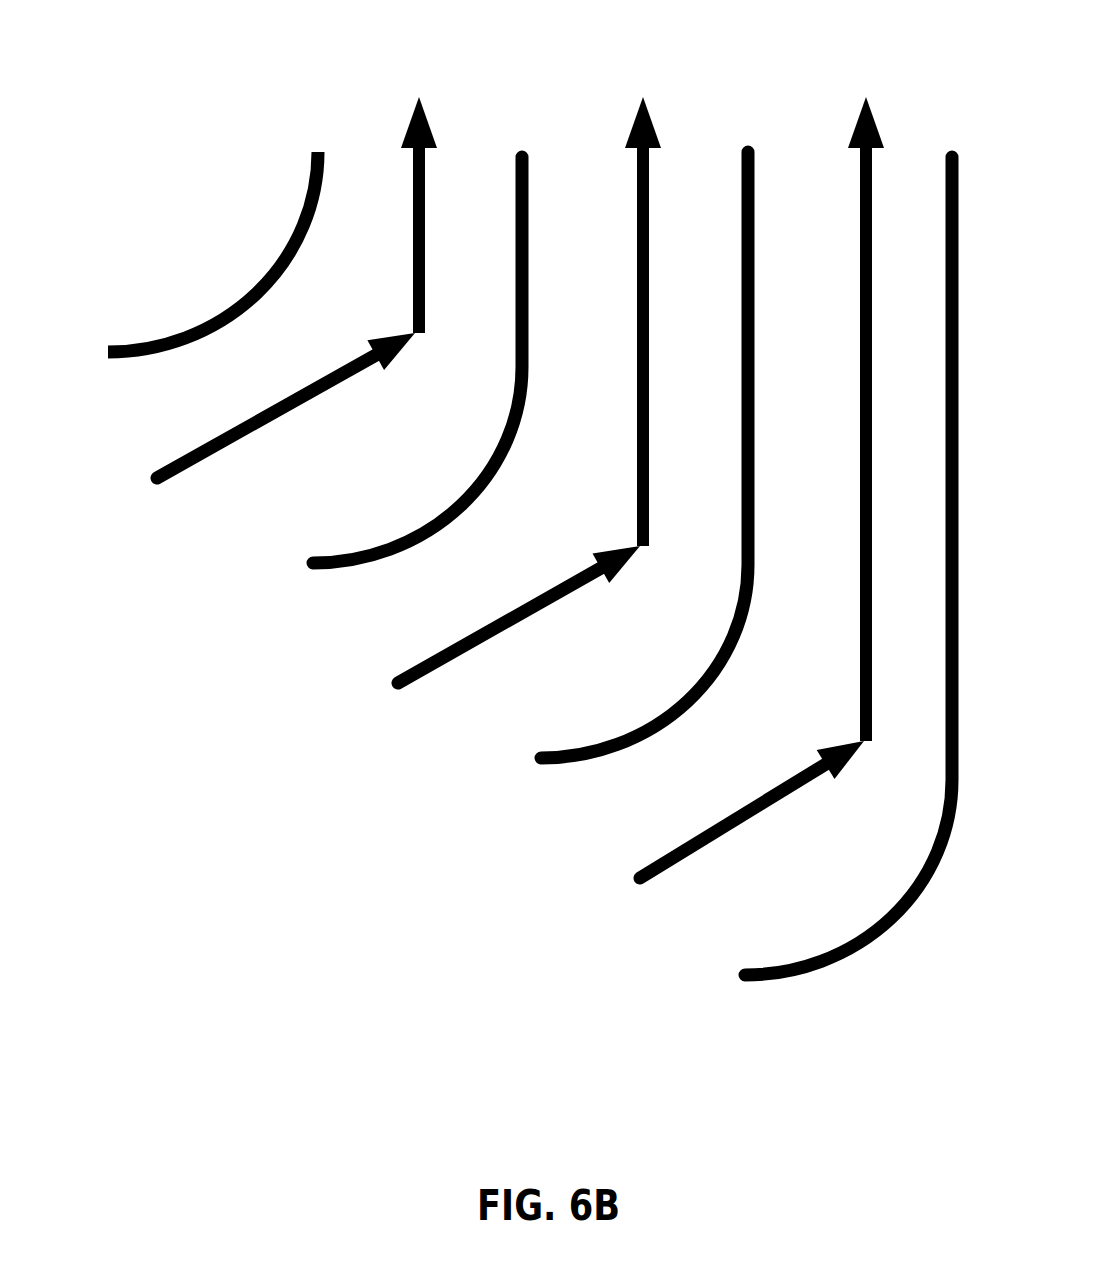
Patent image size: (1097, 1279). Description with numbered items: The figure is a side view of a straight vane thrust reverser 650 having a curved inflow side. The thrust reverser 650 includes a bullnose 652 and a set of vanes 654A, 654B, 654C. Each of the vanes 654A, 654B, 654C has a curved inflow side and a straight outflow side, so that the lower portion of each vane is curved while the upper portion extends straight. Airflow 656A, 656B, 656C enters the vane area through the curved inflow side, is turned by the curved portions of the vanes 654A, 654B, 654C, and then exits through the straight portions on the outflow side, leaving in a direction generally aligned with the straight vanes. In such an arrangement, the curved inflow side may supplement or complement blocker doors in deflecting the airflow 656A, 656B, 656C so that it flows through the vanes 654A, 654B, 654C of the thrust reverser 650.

The thrust reverser 650 is at (158, 105).
The bullnose 652 is at (195, 328).
The vane 654A is at (522, 157).
The vane 654B is at (746, 150).
The vane 654C is at (950, 155).
The airflow 656A is at (157, 478).
The airflow 656B is at (398, 685).
The airflow 656C is at (640, 880).